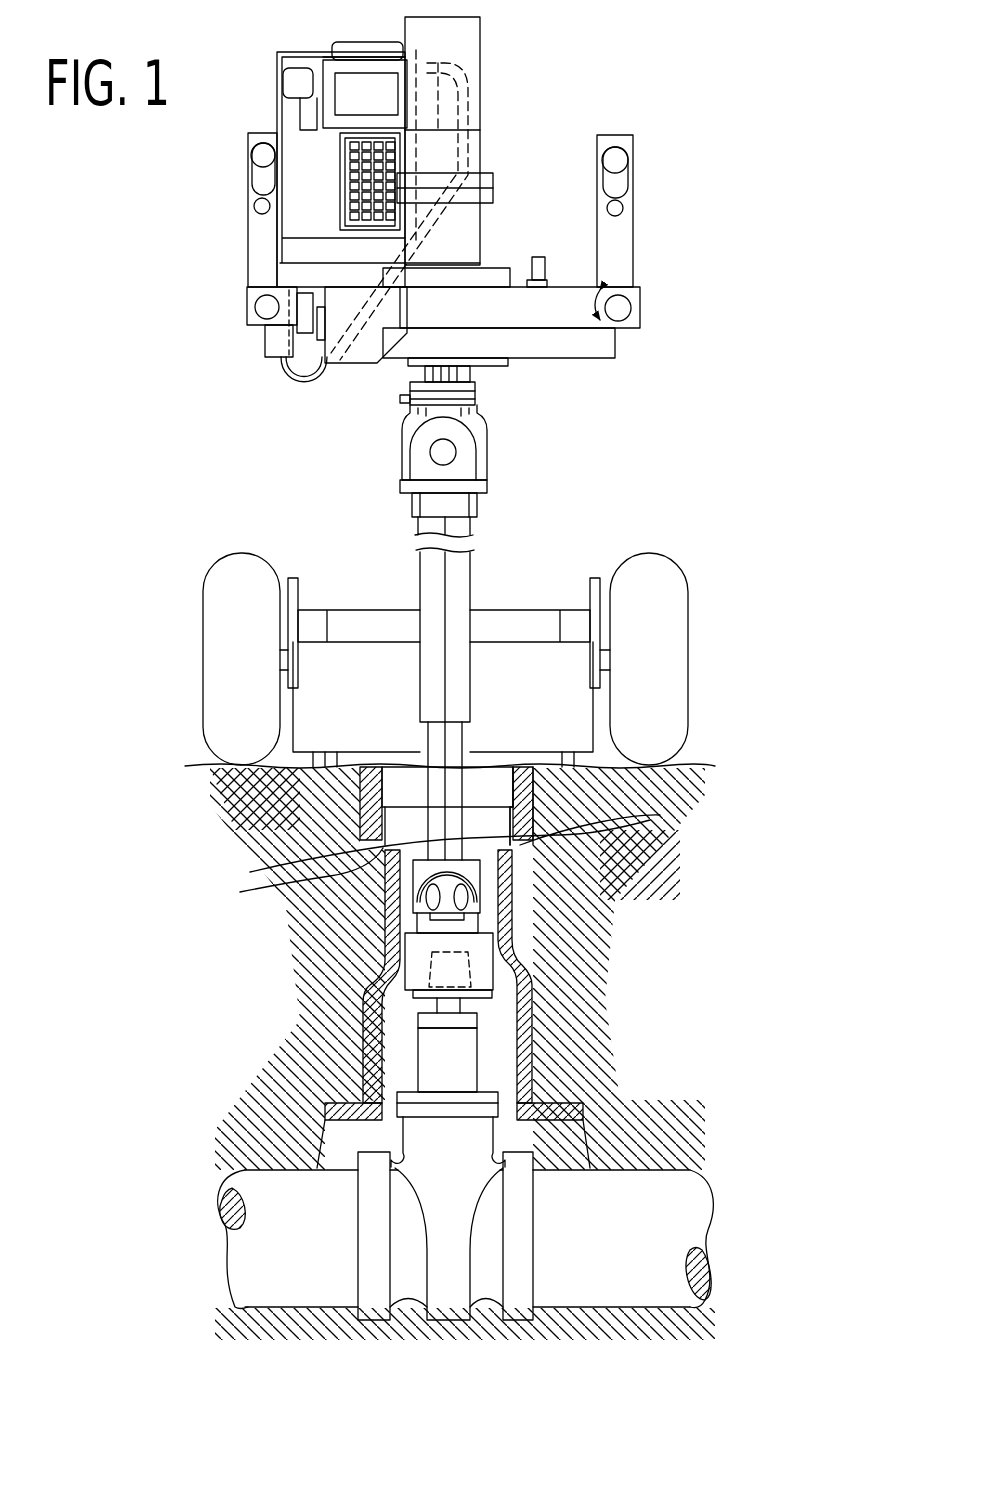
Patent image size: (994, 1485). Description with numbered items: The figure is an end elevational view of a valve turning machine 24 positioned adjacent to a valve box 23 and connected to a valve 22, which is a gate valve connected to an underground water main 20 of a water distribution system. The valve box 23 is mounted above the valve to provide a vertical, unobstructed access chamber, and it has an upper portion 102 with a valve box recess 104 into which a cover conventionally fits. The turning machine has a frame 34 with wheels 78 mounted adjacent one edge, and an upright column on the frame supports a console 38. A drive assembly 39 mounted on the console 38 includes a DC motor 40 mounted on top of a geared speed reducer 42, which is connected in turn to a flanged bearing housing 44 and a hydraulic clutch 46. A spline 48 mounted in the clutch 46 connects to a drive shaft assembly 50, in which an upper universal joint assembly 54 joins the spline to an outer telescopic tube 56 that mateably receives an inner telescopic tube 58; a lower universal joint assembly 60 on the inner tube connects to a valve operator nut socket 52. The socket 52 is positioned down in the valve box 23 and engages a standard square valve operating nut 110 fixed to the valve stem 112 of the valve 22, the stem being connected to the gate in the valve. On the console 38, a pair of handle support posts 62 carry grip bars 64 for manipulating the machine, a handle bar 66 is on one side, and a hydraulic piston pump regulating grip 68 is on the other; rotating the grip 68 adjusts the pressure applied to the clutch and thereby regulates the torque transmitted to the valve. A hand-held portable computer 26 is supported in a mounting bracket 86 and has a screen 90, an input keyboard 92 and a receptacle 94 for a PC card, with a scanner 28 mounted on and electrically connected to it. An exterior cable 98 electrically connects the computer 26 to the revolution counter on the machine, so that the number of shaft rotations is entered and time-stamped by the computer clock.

The water main 20 is at (620, 1190).
The valve 22 is at (502, 1136).
The valve box 23 is at (358, 1040).
The valve turning machine 24 is at (280, 467).
The hand-held portable computer 26 is at (354, 37).
The scanner 28 is at (296, 68).
The frame 34 is at (343, 610).
The console 38 is at (640, 313).
The drive assembly 39 is at (484, 87).
The DC motor 40 is at (463, 38).
The geared speed reducer 42 is at (473, 167).
The flanged bearing housing 44 is at (478, 280).
The hydraulic clutch 46 is at (467, 362).
The spline 48 is at (423, 375).
The drive shaft assembly 50 is at (492, 487).
The valve operator nut socket 52 is at (482, 958).
The upper universal joint assembly 54 is at (488, 452).
The outer telescopic tube 56 is at (470, 578).
The inner telescopic tube 58 is at (462, 744).
The lower universal joint assembly 60 is at (496, 897).
The handle support posts 62 is at (258, 229).
The grip bar 64 is at (260, 202).
The handle bar 66 is at (263, 302).
The hydraulic piston pump regulating grip 68 is at (623, 321).
The wheels 78 is at (238, 578).
The mounting bracket 86 is at (280, 106).
The screen 90 is at (364, 96).
The input keyboard 92 is at (348, 187).
The receptacle 94 is at (371, 50).
The exterior cable 98 is at (297, 384).
The upper portion 102 is at (365, 798).
The valve box recess 104 is at (515, 792).
The valve operating nut 110 is at (500, 979).
The valve stem 112 is at (448, 1000).